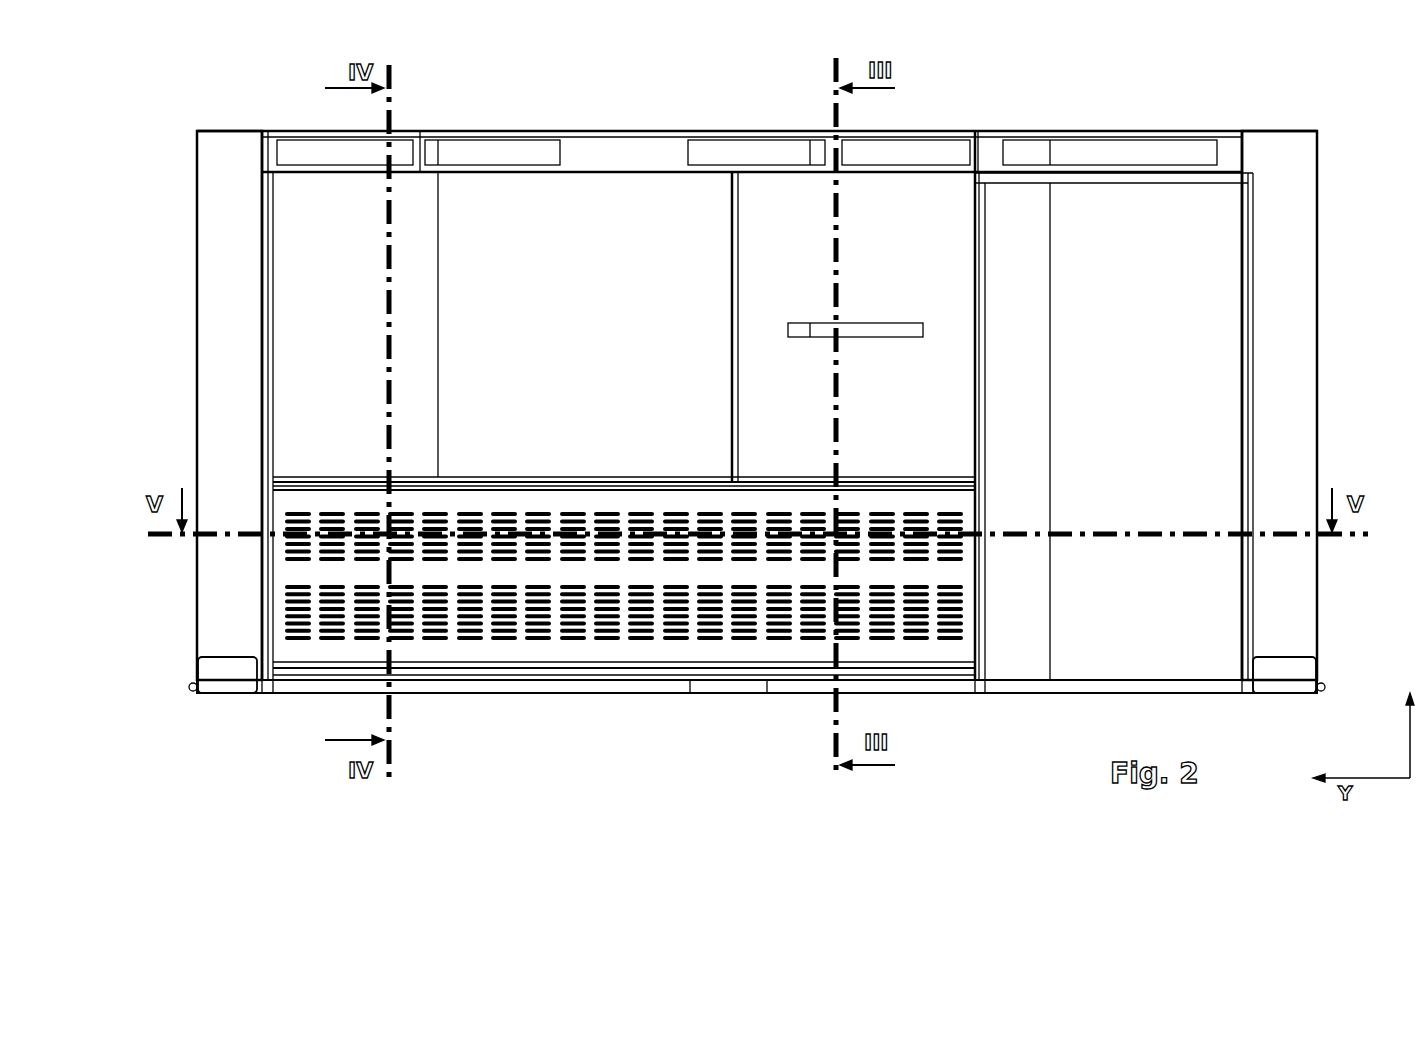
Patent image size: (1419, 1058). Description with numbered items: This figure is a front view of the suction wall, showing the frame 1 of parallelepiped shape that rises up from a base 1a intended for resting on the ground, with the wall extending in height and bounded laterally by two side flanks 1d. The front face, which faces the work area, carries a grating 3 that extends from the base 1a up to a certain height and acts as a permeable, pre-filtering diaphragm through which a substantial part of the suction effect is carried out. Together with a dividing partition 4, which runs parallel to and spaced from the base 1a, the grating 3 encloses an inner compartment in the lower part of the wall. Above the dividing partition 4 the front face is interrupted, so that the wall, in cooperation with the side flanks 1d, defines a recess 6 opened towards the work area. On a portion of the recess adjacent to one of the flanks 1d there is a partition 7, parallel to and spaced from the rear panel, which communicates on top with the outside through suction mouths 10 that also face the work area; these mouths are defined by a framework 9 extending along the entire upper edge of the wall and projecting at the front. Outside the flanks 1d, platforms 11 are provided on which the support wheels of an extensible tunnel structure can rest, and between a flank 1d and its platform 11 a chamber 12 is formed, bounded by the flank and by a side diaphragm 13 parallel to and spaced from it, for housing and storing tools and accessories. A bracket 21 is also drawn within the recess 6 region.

The frame 1 is at (268, 129).
The base 1a is at (750, 697).
The side flanks 1d is at (197, 336).
The grating 3 is at (627, 652).
The dividing partition 4 is at (535, 490).
The recess 6 is at (528, 310).
The partition 7 is at (903, 240).
The framework 9 is at (668, 148).
The suction mouths 10 is at (535, 145).
The platforms 11 is at (228, 697).
The chamber 12 is at (1100, 617).
The side diaphragm 13 is at (1255, 258).
The mounting bracket 21 is at (923, 323).